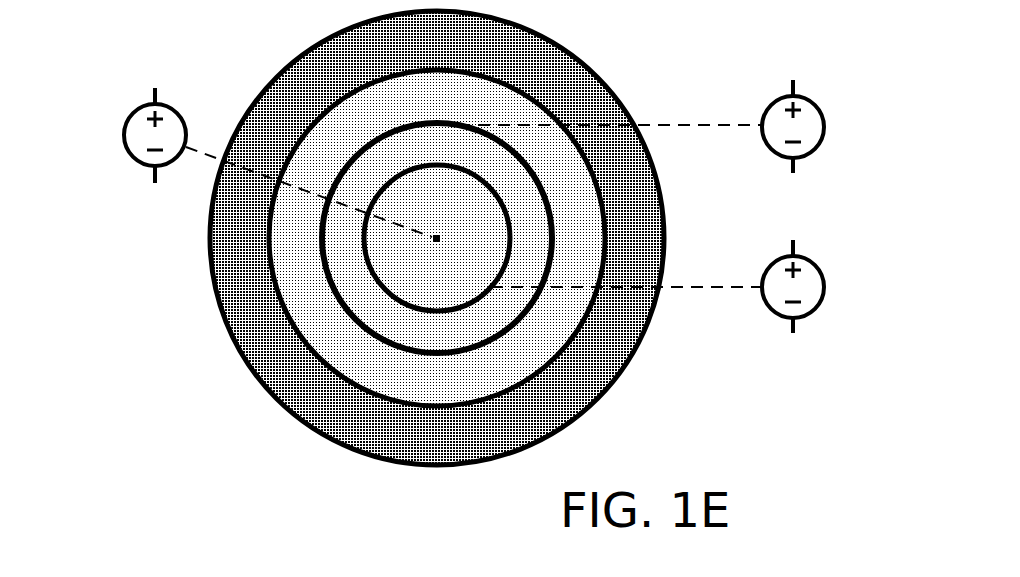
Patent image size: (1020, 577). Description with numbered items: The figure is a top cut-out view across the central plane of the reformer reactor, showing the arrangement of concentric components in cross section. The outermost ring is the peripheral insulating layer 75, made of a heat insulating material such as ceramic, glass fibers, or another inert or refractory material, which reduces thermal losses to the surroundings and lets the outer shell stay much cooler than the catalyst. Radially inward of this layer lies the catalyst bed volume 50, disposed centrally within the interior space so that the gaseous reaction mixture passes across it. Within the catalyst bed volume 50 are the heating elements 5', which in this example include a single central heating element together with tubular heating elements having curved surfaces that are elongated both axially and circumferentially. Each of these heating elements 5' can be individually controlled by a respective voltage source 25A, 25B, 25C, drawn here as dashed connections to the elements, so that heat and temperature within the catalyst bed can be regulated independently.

The peripheral insulating layer 75 is at (642, 195).
The catalyst bed volume 50 is at (385, 128).
The heating elements 5' is at (437, 238).
The voltage source 25A is at (124, 135).
The voltage source 25B is at (826, 287).
The voltage source 25C is at (826, 127).